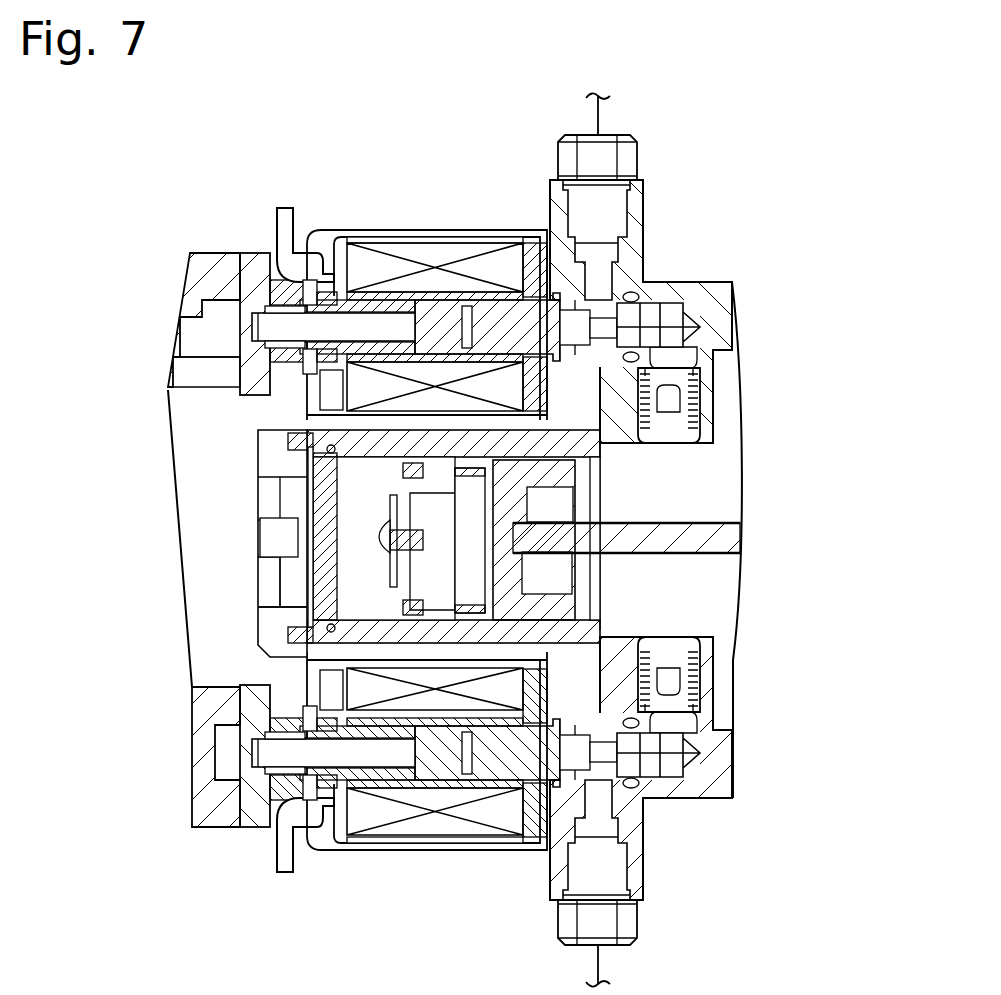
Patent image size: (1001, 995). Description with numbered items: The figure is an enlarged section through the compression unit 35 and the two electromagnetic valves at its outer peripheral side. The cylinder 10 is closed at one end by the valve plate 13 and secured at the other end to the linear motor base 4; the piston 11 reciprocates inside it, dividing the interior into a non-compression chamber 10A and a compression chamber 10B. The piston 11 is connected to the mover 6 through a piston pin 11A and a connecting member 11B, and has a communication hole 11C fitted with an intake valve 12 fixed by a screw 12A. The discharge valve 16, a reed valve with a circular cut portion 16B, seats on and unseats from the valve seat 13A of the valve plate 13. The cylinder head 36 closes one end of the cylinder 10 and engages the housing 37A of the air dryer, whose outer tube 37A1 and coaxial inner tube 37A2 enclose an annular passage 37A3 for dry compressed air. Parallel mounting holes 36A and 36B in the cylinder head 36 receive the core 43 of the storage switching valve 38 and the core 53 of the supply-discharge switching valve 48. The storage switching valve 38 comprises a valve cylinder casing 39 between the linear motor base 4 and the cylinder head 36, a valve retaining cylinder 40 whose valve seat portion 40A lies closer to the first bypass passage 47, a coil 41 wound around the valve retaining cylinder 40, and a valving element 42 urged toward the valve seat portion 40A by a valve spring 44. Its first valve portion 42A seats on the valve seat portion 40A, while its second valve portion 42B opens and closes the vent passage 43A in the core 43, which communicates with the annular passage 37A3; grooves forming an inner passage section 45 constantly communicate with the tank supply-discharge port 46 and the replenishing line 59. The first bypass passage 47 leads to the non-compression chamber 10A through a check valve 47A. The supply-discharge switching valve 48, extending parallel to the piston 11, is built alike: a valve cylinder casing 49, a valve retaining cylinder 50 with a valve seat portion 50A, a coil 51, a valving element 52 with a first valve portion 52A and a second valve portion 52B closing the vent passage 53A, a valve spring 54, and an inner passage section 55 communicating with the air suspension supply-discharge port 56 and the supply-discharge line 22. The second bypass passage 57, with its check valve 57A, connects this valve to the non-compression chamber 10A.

The linear motor base 4 is at (700, 787).
The mover 6 is at (722, 537).
The cylinder 10 is at (548, 452).
The non-compression chamber 10A is at (548, 483).
The compression chamber 10B is at (335, 492).
The piston 11 is at (507, 595).
The piston pin 11A is at (473, 557).
The connecting member 11B is at (542, 517).
The communication hole 11C is at (382, 506).
The intake valve 12 is at (385, 578).
The screw 12A is at (387, 545).
The valve plate 13 is at (305, 446).
The valve seat 13A is at (317, 513).
The discharge valve 16 is at (300, 540).
The cut portion 16B is at (280, 592).
The supply-discharge line 22 is at (600, 952).
The compression unit 35 is at (372, 182).
The cylinder head 36 is at (258, 290).
The mounting hole 36A is at (255, 330).
The mounting hole 36B is at (255, 749).
The housing 37A is at (166, 498).
The outer tube 37A1 is at (203, 283).
The inner tube 37A2 is at (183, 373).
The annular passage 37A3 is at (200, 357).
The storage switching valve 38 is at (318, 229).
The valve cylinder casing 39 is at (462, 240).
The valve retaining cylinder 40 is at (498, 288).
The valve seat portion 40A is at (618, 295).
The coil 41 is at (470, 318).
The valving element 42 is at (452, 285).
The first valve portion 42A is at (700, 328).
The second valve portion 42B is at (372, 318).
The core 43 is at (342, 268).
The vent passage 43A is at (338, 308).
The valve spring 44 is at (412, 310).
The inner passage section 45 is at (532, 242).
The tank supply-discharge port 46 is at (605, 160).
The first bypass passage 47 is at (680, 300).
The check valve 47A is at (657, 382).
The supply-discharge switching valve 48 is at (310, 848).
The valve cylinder casing 49 is at (470, 840).
The valve retaining cylinder 50 is at (503, 787).
The valve seat portion 50A is at (617, 762).
The coil 51 is at (485, 812).
The valving element 52 is at (447, 800).
The first valve portion 52A is at (620, 752).
The second valve portion 52B is at (413, 762).
The core 53 is at (323, 768).
The vent passage 53A is at (348, 758).
The valve spring 54 is at (447, 757).
The inner passage section 55 is at (535, 840).
The air suspension supply-discharge port 56 is at (605, 918).
The second bypass passage 57 is at (703, 745).
The check valve 57A is at (670, 698).
The replenishing line 59 is at (600, 112).